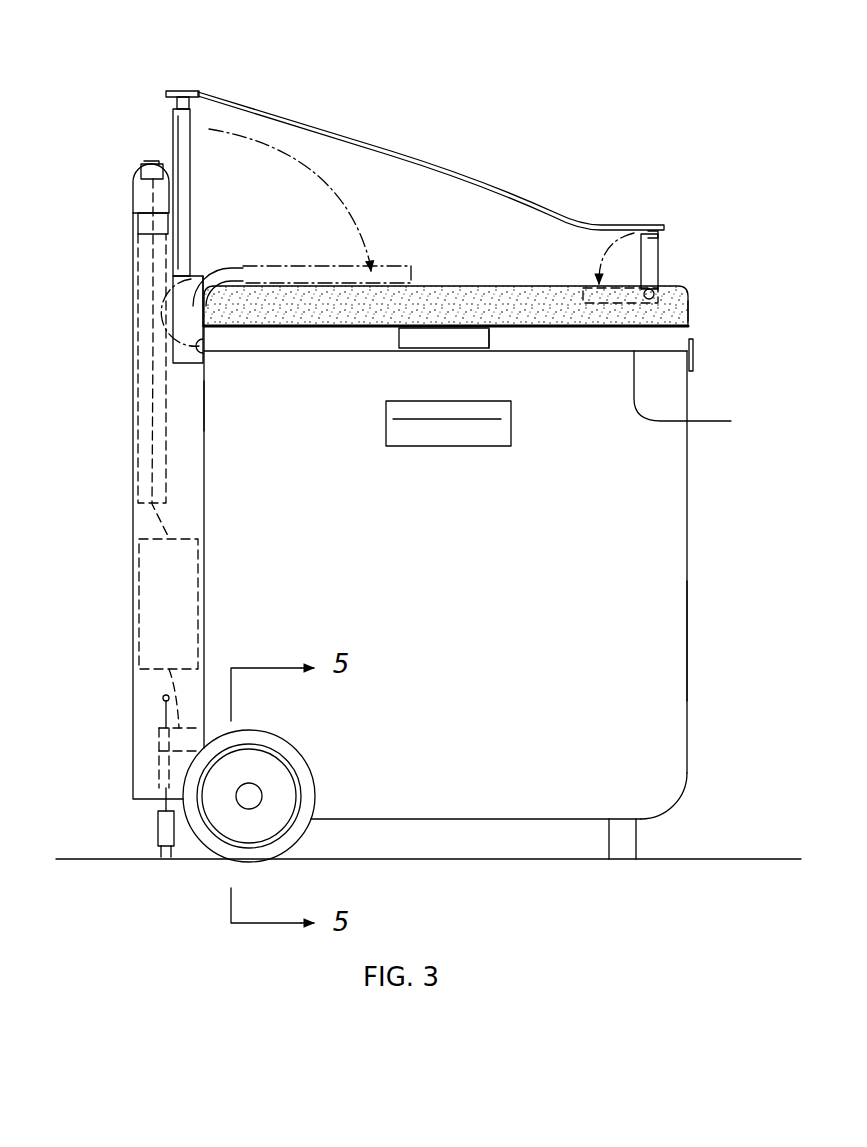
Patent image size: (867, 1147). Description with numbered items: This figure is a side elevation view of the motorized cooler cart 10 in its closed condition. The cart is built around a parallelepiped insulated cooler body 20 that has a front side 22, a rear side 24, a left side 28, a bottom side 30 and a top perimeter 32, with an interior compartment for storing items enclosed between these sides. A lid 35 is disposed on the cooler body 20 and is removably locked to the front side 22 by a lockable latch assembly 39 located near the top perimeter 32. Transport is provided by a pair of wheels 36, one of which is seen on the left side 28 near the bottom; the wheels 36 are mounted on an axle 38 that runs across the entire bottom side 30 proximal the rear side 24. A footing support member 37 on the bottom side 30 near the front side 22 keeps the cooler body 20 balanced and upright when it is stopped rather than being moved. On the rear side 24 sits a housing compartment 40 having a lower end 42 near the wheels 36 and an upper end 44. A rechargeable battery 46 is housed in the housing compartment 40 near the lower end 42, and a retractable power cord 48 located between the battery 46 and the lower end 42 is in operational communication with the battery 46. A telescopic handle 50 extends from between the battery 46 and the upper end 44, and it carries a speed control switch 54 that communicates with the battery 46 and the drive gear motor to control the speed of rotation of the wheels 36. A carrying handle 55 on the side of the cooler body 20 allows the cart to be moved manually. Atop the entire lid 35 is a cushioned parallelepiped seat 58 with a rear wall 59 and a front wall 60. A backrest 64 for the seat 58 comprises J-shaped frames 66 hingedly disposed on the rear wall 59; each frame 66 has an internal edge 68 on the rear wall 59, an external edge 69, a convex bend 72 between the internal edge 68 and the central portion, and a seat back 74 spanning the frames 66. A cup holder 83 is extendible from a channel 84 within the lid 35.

The motorized cooler cart 10 is at (440, 178).
The insulated cooler body 20 is at (680, 790).
The front side 22 is at (720, 582).
The rear side 24 is at (200, 405).
The left side 28 is at (680, 613).
The bottom side 30 is at (505, 818).
The top perimeter 32 is at (702, 392).
The lid 35 is at (678, 333).
The wheels 36 is at (258, 853).
The footing support member 37 is at (636, 830).
The axle 38 is at (237, 800).
The lockable latch assembly 39 is at (693, 355).
The housing compartment 40 is at (132, 512).
The lower end 42 is at (135, 812).
The upper end 44 is at (135, 232).
The rechargeable battery 46 is at (138, 585).
The retractable power cord 48 is at (162, 697).
The telescopic handle 50 is at (137, 224).
The speed control switch 54 is at (140, 165).
The carrying handles 55 is at (510, 410).
The cushioned parallelepiped seat 58 is at (572, 292).
The rear wall 59 is at (205, 300).
The front wall 60 is at (690, 305).
The backrest 64 is at (190, 90).
The J-shaped frames 66 is at (190, 175).
The internal edge 68 is at (178, 340).
The external edge 69 is at (178, 104).
The convex bend 72 is at (182, 322).
The seat back 74 is at (180, 216).
The cup holders 83 is at (456, 343).
The channel 84 is at (498, 328).